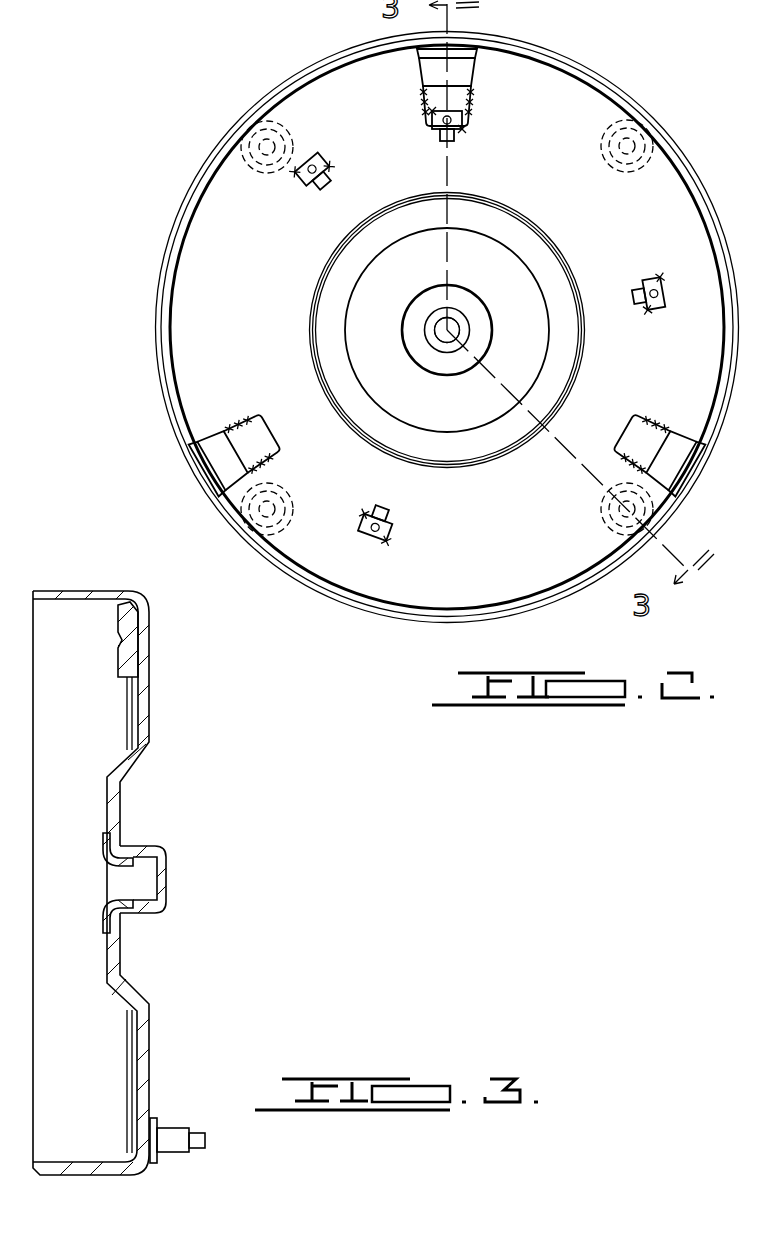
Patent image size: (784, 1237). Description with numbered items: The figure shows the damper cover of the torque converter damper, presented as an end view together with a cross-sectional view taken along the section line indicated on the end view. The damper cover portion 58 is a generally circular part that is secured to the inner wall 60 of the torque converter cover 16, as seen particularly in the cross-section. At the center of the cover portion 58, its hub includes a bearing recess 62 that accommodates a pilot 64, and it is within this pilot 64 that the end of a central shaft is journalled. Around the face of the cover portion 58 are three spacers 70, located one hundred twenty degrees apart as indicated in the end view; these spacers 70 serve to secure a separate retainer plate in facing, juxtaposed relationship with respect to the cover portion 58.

In FIG. 3, the torque converter cover 16 is at (150, 755).
In FIG. 2, the damper cover portion 58 is at (456, 114).
In FIG. 3, the damper cover portion 58 is at (130, 652).
In FIG. 2, the inner wall 60 is at (548, 200).
In FIG. 3, the inner wall 60 is at (133, 696).
In FIG. 3, the bearing recess 62 is at (145, 848).
In FIG. 2, the pilot 64 is at (440, 330).
In FIG. 3, the pilot 64 is at (103, 860).
In FIG. 2, the spacers 70 is at (314, 165).